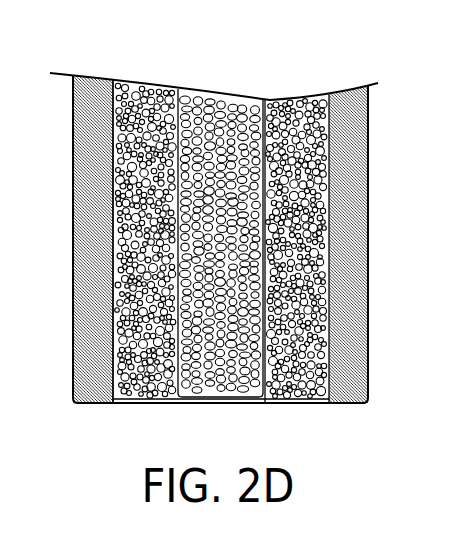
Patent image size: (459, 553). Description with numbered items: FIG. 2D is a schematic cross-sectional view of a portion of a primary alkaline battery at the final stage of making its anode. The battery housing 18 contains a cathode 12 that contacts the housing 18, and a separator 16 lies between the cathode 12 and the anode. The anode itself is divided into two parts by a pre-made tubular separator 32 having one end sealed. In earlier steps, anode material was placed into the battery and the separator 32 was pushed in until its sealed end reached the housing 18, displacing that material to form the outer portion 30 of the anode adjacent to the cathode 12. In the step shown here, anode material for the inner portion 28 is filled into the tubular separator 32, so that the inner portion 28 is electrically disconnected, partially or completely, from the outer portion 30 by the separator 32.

The cathode 12 is at (346, 184).
The separator 16 is at (112, 212).
The housing 18 is at (73, 320).
The inner portion 28 is at (236, 100).
The outer portion 30 is at (328, 254).
The separator 32 is at (209, 98).